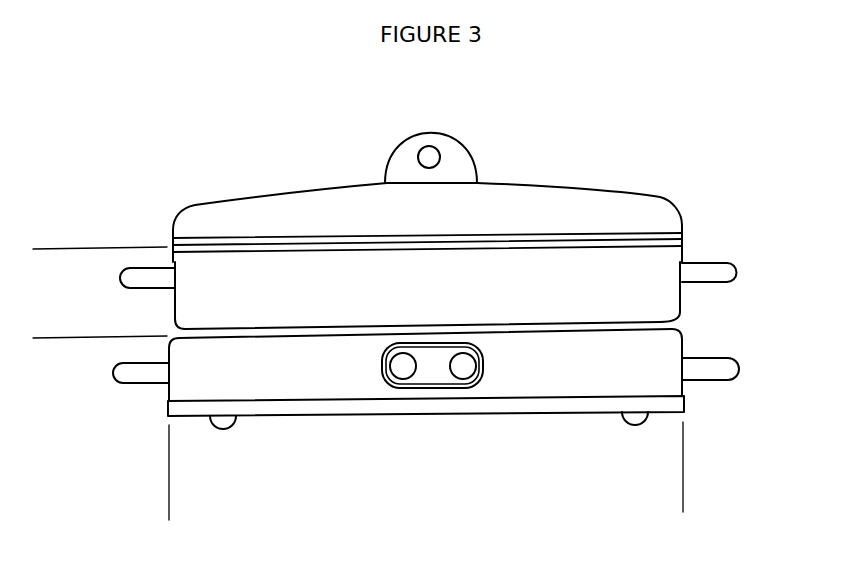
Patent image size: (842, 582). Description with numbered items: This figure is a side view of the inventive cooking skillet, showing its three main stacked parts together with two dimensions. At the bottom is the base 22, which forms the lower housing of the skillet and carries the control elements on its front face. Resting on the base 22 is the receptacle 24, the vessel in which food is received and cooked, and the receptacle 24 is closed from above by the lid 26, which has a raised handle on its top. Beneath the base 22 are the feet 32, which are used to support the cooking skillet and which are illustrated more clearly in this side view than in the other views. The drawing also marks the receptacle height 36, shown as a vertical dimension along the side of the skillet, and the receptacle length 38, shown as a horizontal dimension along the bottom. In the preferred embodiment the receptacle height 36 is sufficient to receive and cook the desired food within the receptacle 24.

The base 22 is at (685, 342).
The receptacle 24 is at (667, 260).
The lid 26 is at (625, 207).
The feet 32 is at (642, 425).
The receptacle height 36 is at (40, 249).
The receptacle length 38 is at (169, 502).